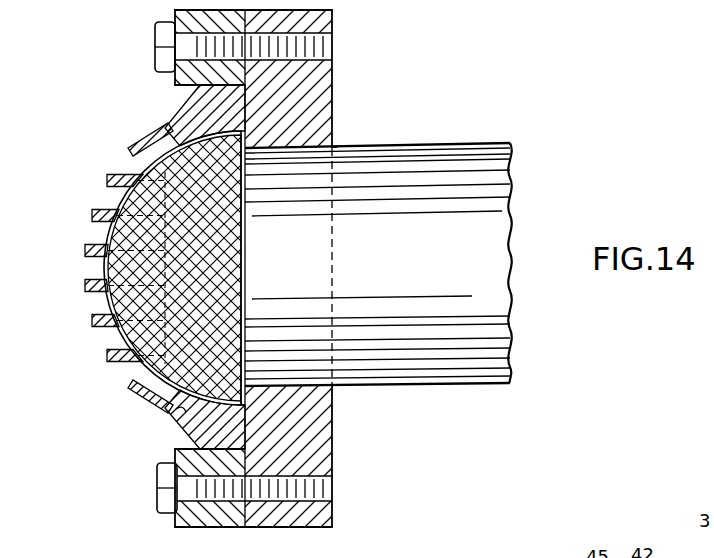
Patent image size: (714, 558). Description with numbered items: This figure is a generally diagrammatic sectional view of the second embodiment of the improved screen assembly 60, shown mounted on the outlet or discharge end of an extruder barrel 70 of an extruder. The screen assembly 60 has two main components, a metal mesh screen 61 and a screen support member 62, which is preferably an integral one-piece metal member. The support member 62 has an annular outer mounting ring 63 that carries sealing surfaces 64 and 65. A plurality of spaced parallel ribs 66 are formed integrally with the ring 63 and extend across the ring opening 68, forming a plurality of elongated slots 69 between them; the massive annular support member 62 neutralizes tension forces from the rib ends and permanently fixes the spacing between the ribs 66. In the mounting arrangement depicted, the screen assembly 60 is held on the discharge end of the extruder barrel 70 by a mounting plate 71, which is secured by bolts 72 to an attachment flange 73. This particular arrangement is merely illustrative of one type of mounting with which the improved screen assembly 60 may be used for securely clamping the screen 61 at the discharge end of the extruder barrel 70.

The screen assembly 60 is at (112, 129).
The metal mesh screen 61 is at (240, 245).
The screen support member 62 is at (268, 438).
The annular outer mounting ring 63 is at (216, 102).
The sealing surface 64 is at (233, 427).
The sealing surface 65 is at (177, 413).
The ribs 66 is at (105, 180).
The ring opening 68 is at (246, 412).
The elongated slots 69 is at (100, 244).
The extruder barrel 70 is at (444, 188).
The mounting plate 71 is at (203, 517).
The bolts 72 is at (162, 33).
The attachment flange 73 is at (318, 91).